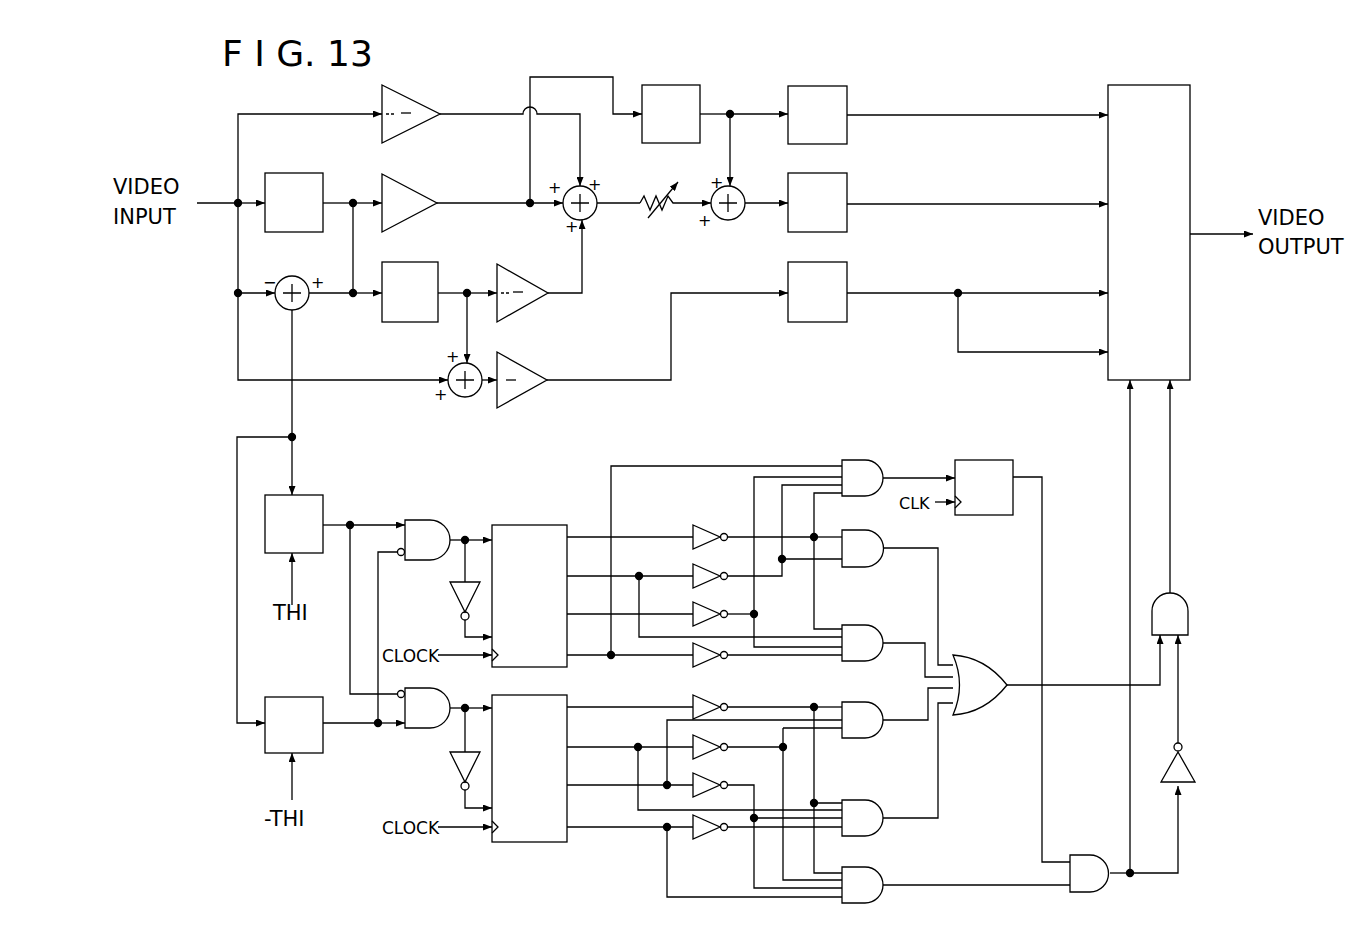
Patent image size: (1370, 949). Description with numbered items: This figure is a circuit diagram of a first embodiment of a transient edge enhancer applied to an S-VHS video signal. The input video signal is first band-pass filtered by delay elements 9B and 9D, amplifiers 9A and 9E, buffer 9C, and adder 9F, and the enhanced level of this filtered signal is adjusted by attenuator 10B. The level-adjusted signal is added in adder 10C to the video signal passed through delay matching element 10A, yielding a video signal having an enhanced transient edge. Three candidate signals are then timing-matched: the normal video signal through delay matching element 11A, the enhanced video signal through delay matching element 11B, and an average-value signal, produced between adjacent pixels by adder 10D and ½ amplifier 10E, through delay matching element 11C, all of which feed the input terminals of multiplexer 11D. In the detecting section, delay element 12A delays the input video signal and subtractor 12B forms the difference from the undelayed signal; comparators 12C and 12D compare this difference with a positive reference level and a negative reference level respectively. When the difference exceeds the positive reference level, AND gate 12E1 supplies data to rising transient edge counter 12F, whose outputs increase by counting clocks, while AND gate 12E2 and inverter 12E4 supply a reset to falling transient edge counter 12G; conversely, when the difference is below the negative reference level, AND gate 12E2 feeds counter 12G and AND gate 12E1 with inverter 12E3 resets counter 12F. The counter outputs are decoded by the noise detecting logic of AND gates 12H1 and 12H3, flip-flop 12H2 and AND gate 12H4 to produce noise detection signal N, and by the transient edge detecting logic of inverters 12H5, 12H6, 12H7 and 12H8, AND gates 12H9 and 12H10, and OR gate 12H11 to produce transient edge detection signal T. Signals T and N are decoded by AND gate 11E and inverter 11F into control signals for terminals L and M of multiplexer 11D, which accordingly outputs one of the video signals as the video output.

The amplifier 9A is at (424, 103).
The delay element 9B is at (310, 188).
The delay element 12A is at (295, 173).
The buffer 9C is at (434, 171).
The delay element 9D is at (432, 262).
The amplifier 9E is at (517, 270).
The adder 9F is at (601, 212).
The delay matching element 10A is at (694, 85).
The attenuator 10B is at (675, 214).
The adder 10C is at (749, 216).
The adder 10D is at (471, 395).
The ½ amplifier 10E is at (530, 365).
The delay matching element 11A is at (847, 100).
The delay matching element 11B is at (847, 185).
The delay matching element 11C is at (847, 275).
The multiplexer 11D is at (1190, 137).
The AND gate 11E is at (1188, 625).
The inverter 11F is at (1190, 765).
The subtractor 12B is at (328, 356).
The comparator 12C is at (312, 495).
The comparator 12D is at (286, 697).
The AND gate 12E1 is at (425, 520).
The AND gate 12E2 is at (425, 728).
The inverter 12E3 is at (447, 588).
The inverter 12E4 is at (450, 758).
The rising transient edge counter 12F is at (522, 525).
The falling transient edge counter 12G is at (520, 842).
The AND gate 12H1 is at (898, 468).
The flip-flop 12H2 is at (1002, 649).
The AND gate 12H3 is at (955, 898).
The AND gate 12H4 is at (1088, 855).
The inverter 12H5 is at (767, 683).
The inverter 12H6 is at (767, 682).
The inverter 12H7 is at (767, 682).
The inverter 12H8 is at (743, 752).
The AND gate 12H9 is at (897, 634).
The AND gate 12H10 is at (897, 720).
The OR gate 12H11 is at (985, 670).